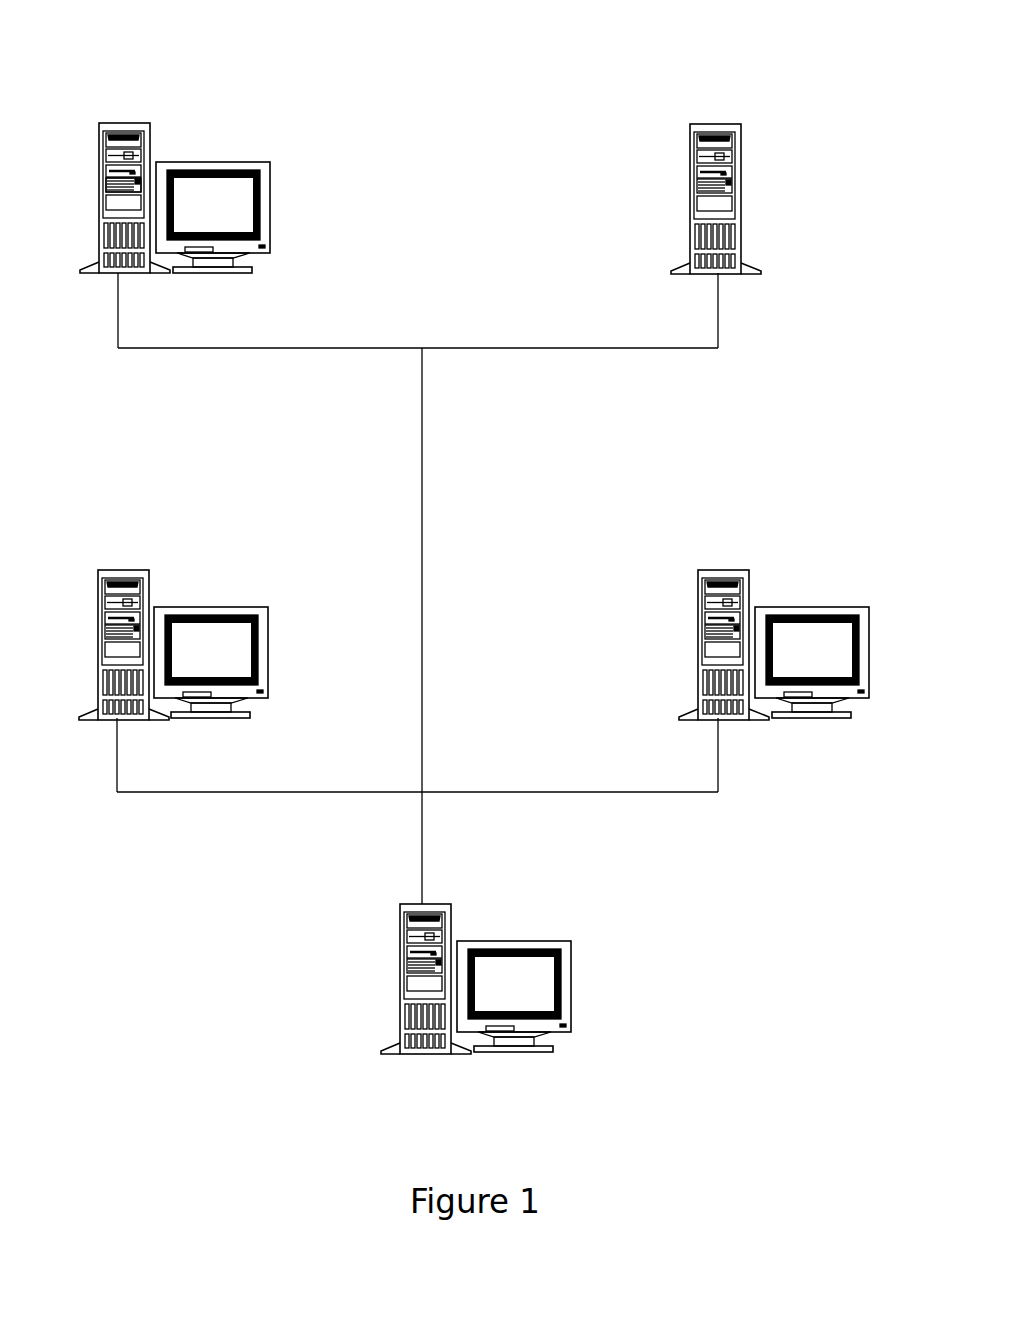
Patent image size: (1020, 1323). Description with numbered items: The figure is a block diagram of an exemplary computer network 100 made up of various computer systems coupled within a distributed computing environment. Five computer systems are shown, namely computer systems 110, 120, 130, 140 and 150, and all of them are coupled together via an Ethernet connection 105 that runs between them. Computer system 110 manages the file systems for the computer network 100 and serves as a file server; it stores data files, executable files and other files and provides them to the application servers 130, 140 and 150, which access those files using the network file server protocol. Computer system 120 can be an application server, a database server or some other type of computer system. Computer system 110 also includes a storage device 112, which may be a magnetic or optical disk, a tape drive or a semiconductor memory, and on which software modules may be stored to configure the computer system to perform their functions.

The computer network 100 is at (498, 23).
The Ethernet connection 105 is at (467, 468).
The file server 110 is at (191, 217).
The storage device 112 is at (112, 184).
The computer system 120 is at (718, 182).
The application server 130 is at (206, 659).
The application server 140 is at (476, 994).
The application server 150 is at (808, 659).